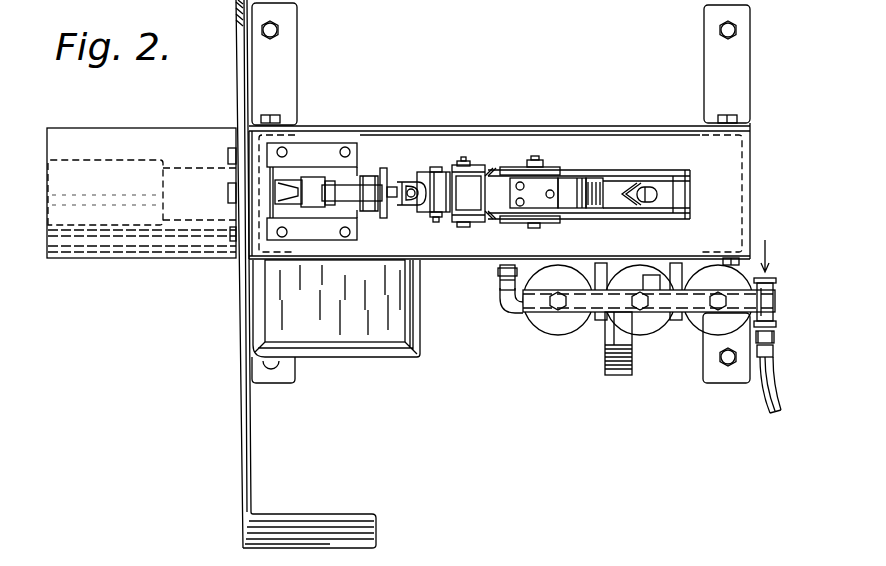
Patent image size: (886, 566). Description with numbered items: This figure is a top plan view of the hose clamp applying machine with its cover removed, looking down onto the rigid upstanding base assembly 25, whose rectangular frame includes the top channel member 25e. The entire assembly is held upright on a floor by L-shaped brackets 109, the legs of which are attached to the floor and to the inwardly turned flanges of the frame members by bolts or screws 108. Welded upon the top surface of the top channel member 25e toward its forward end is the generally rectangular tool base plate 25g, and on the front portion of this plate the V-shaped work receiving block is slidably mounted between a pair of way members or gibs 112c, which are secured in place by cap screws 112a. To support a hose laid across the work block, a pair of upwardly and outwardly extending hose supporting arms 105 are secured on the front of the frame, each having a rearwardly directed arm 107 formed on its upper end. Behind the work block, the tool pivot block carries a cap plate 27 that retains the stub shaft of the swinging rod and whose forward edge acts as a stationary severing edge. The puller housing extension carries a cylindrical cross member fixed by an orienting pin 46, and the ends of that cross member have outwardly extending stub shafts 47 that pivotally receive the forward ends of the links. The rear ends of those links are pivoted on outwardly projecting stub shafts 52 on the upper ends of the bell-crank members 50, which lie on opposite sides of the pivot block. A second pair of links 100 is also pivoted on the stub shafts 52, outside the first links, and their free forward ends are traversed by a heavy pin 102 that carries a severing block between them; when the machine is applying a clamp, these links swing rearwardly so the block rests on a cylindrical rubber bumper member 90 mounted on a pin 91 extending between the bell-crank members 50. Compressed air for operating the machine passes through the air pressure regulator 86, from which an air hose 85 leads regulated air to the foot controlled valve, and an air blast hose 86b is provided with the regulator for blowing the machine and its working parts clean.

The base assembly 25 is at (517, 125).
The top channel member 25e is at (722, 177).
The tool base plate 25g is at (407, 152).
The cap plate 27 is at (537, 203).
The orienting pin 46 is at (417, 220).
The stub shafts 47 is at (435, 222).
The bell-crank members 50 is at (643, 160).
The stub shafts 52 is at (541, 160).
The air hose 85 is at (498, 270).
The air pressure regulator 86 is at (570, 347).
The air blast hose 86b is at (772, 410).
The bumper member 90 is at (594, 206).
The pin 91 is at (580, 217).
The links 100 is at (507, 224).
The pin 102 is at (476, 153).
The hose supporting arms 105 is at (236, 81).
The rearwardly directed arm 107 is at (325, 496).
The bolts or screws 108 is at (279, 28).
The L-shaped brackets 109 is at (283, 65).
The cap screws 112a is at (348, 150).
The way members or gibs 112c is at (318, 153).